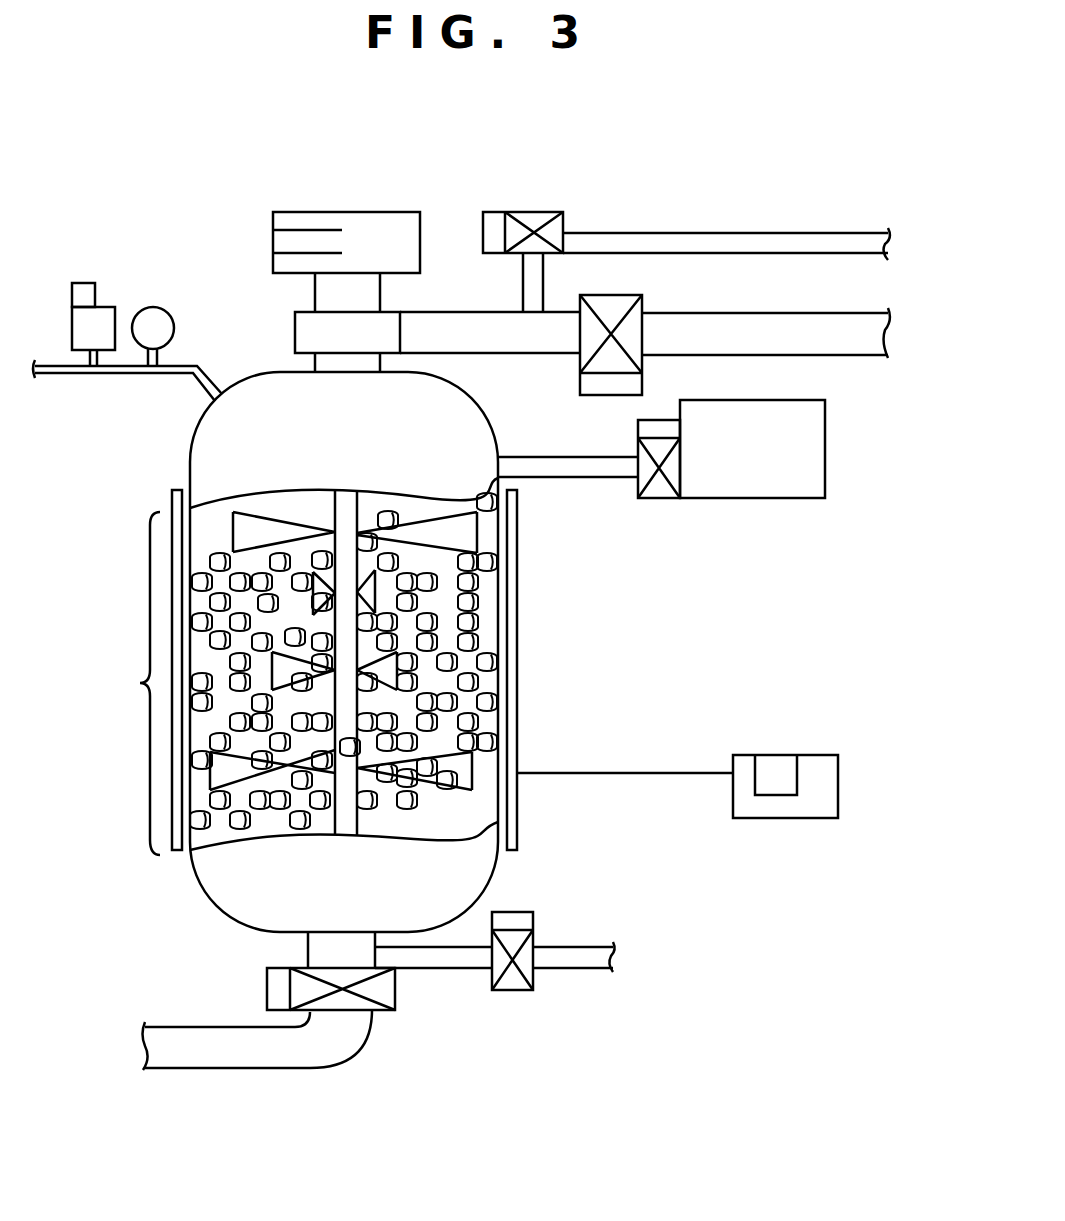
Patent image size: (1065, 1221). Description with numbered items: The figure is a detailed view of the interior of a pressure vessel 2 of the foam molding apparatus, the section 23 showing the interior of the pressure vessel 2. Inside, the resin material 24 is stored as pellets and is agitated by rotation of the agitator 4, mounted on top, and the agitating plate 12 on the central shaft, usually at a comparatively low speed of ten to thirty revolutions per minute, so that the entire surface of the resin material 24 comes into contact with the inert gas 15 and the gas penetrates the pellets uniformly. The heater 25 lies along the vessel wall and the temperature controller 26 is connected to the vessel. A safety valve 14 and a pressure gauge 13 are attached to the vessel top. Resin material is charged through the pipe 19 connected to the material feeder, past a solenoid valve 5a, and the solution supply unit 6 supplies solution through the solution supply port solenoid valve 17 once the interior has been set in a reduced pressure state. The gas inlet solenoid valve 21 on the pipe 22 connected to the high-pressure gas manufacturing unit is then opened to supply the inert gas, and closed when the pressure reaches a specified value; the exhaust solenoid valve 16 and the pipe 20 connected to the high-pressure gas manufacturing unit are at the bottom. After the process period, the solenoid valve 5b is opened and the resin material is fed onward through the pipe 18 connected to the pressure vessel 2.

The pressure vessel 2 is at (120, 556).
The agitator 4 is at (346, 221).
The valve 5a is at (642, 307).
The solenoid valve 5b is at (267, 987).
The solution supply unit 6 is at (752, 488).
The agitating plate 12 is at (247, 520).
The pressure gauge 13 is at (154, 321).
The safety valve 14 is at (105, 319).
The inert gas 15 is at (440, 512).
The exhaust solenoid valve 16 is at (536, 937).
The solution supply port solenoid valve 17 is at (660, 490).
The pipe connected to the pressure vessel 18 is at (223, 1057).
The pipe connected to the material feeder 19 is at (858, 343).
The pipe connected to the high-pressure gas manufacturing unit 20 is at (573, 966).
The gas inlet solenoid valve 21 is at (535, 220).
The pipe connected to the high-pressure gas manufacturing unit 22 is at (782, 243).
The section showing the interior of the pressure vessel 23 is at (130, 683).
The resin material 24 is at (498, 633).
The heater 25 is at (179, 792).
The temperature controller 26 is at (773, 766).